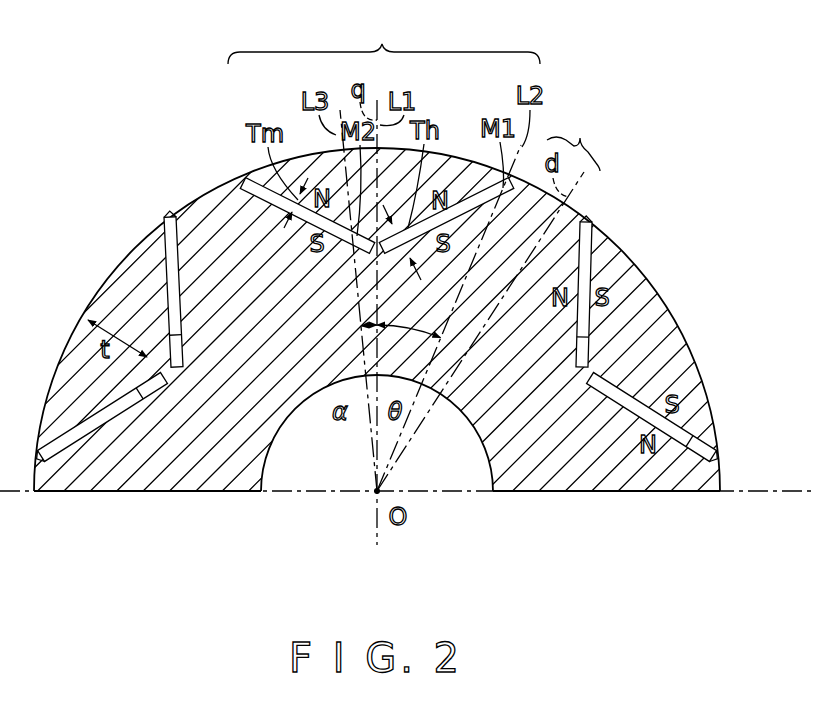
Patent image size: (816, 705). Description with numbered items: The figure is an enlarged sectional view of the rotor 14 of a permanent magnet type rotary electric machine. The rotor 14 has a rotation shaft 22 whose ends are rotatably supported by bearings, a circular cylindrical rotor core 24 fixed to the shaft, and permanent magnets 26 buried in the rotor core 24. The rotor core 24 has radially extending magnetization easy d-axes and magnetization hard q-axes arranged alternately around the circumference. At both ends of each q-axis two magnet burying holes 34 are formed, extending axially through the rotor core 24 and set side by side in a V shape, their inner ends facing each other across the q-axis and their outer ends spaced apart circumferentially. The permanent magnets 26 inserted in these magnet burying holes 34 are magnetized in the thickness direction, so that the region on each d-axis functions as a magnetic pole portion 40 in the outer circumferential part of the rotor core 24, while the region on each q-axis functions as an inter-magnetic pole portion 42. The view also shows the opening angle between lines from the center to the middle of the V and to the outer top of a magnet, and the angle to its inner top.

The rotor 14 is at (669, 240).
The rotation shaft 22 is at (340, 472).
The rotor core 24 is at (604, 472).
The permanent magnet 26 is at (247, 180).
The magnet burying hole 34 is at (177, 216).
The magnetic pole portion 40 is at (573, 145).
The inter-magnetic pole portion 42 is at (384, 39).